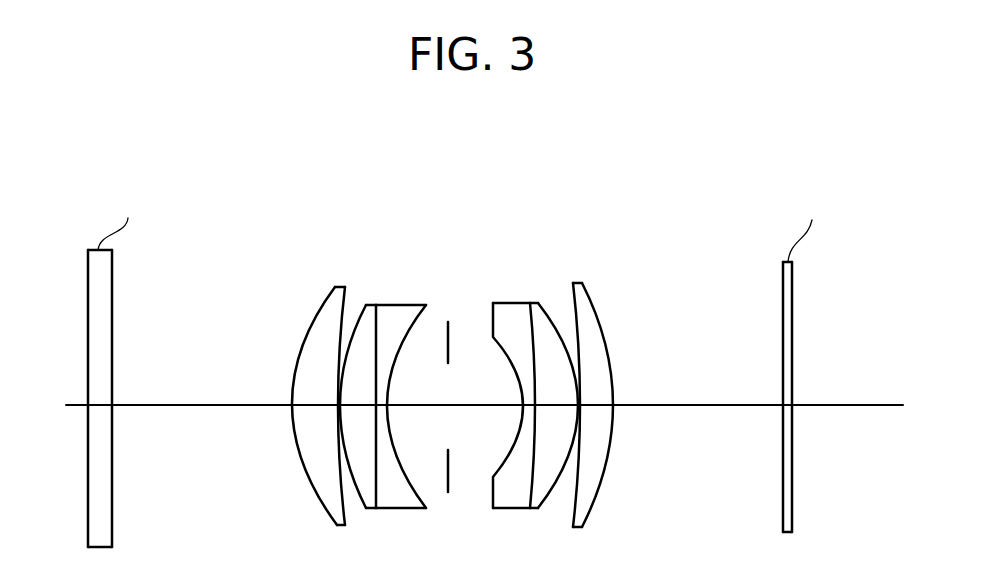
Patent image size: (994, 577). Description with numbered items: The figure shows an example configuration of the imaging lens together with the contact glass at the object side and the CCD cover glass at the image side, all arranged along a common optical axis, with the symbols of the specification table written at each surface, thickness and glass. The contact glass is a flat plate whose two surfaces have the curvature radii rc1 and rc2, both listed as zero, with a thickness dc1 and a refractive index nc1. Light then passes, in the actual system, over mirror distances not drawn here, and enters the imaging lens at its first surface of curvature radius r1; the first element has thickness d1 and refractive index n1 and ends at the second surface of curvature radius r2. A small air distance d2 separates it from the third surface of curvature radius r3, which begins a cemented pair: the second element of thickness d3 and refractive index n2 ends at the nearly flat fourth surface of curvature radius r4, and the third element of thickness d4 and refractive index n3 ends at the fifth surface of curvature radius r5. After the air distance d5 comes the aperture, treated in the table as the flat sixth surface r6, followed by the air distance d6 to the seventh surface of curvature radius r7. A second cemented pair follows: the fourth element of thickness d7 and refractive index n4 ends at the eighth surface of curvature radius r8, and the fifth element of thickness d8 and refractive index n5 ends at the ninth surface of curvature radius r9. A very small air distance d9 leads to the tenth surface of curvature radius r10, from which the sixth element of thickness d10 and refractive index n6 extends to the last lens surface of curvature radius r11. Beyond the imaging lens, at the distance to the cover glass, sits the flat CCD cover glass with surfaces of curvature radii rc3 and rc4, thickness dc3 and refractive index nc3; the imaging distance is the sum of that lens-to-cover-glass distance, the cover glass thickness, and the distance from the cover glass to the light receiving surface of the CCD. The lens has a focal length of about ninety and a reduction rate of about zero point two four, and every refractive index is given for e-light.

The curvature radius of contact glass first surface rc1 is at (88, 277).
The curvature radius of contact glass second surface rc2 is at (112, 277).
The thickness of contact glass dc1 is at (130, 358).
The refractive index of contact glass nc1 is at (130, 358).
The curvature radius of first lens surface r1 is at (322, 305).
The curvature radius of second lens surface r2 is at (347, 297).
The thickness of first lens element d1 is at (280, 384).
The air distance between second and third surfaces d2 is at (337, 415).
The refractive index of first lens element n1 is at (280, 384).
The curvature radius of third lens surface r3 is at (366, 305).
The curvature radius of fourth lens surface r4 is at (377, 320).
The thickness of second lens element d3 is at (331, 408).
The refractive index of second lens element n2 is at (331, 408).
The curvature radius of fifth lens surface r5 is at (422, 318).
The thickness of third lens element d4 is at (408, 408).
The refractive index of third lens element n3 is at (408, 408).
The distance from fifth surface to aperture d5 is at (417, 393).
The aperture surface r6 is at (459, 323).
The distance from aperture to seventh surface d6 is at (485, 393).
The curvature radius of seventh lens surface r7 is at (491, 315).
The curvature radius of eighth lens surface r8 is at (526, 311).
The thickness of fourth lens element d7 is at (495, 404).
The refractive index of fourth lens element n4 is at (495, 404).
The curvature radius of ninth lens surface r9 is at (551, 311).
The thickness of fifth lens element d8 is at (584, 404).
The refractive index of fifth lens element n5 is at (584, 404).
The air distance between ninth and tenth surfaces d9 is at (588, 412).
The curvature radius of tenth lens surface r10 is at (568, 290).
The curvature radius of eleventh lens surface r11 is at (590, 297).
The refractive index of sixth lens element n6 is at (624, 385).
The thickness of sixth lens element d10 is at (597, 403).
The curvature radius of CCD cover glass first surface rc3 is at (783, 277).
The curvature radius of CCD cover glass second surface rc4 is at (792, 277).
The thickness of CCD cover glass dc3 is at (809, 334).
The refractive index of CCD cover glass nc3 is at (809, 334).